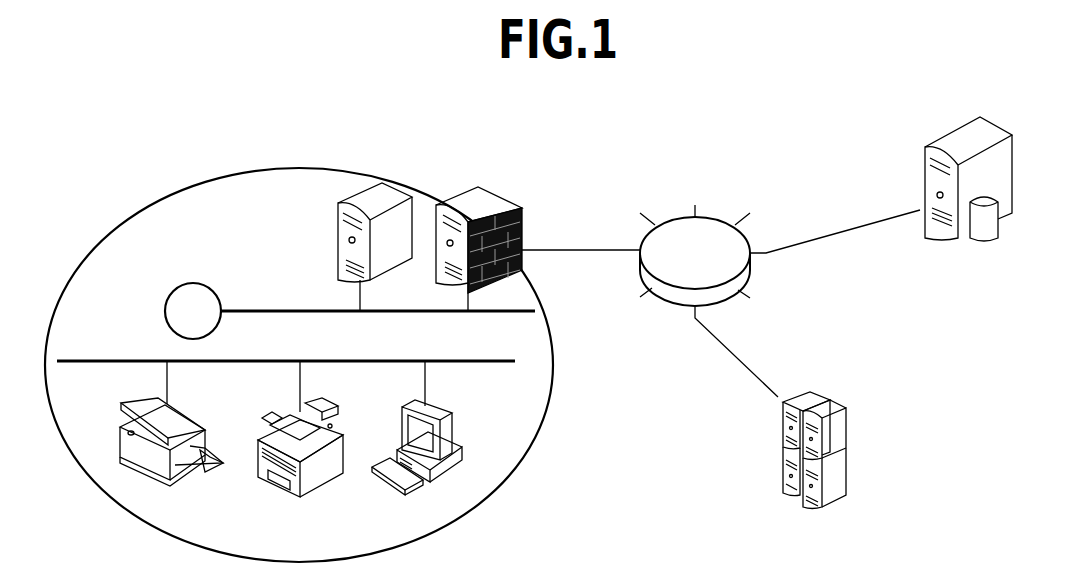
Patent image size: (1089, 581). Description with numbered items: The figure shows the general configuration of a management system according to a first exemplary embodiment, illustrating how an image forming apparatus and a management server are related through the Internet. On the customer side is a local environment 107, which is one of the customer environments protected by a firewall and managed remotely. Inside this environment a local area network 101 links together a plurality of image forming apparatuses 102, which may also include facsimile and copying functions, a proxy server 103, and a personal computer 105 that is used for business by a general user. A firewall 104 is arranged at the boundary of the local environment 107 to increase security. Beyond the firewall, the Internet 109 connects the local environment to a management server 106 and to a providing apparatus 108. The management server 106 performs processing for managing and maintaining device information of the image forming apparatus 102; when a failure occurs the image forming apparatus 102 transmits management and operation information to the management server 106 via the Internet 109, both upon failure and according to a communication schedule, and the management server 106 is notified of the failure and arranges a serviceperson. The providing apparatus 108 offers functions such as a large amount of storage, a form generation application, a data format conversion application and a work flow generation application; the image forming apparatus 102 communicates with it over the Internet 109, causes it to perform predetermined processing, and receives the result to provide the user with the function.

The local area network 101 is at (194, 283).
The image forming apparatus 102 is at (213, 401).
The proxy server 103 is at (337, 237).
The firewall 104 is at (488, 190).
The personal computer 105 is at (385, 490).
The management server 106 is at (1013, 162).
The local environment 107 is at (292, 167).
The providing apparatus 108 is at (848, 430).
The Internet 109 is at (715, 218).